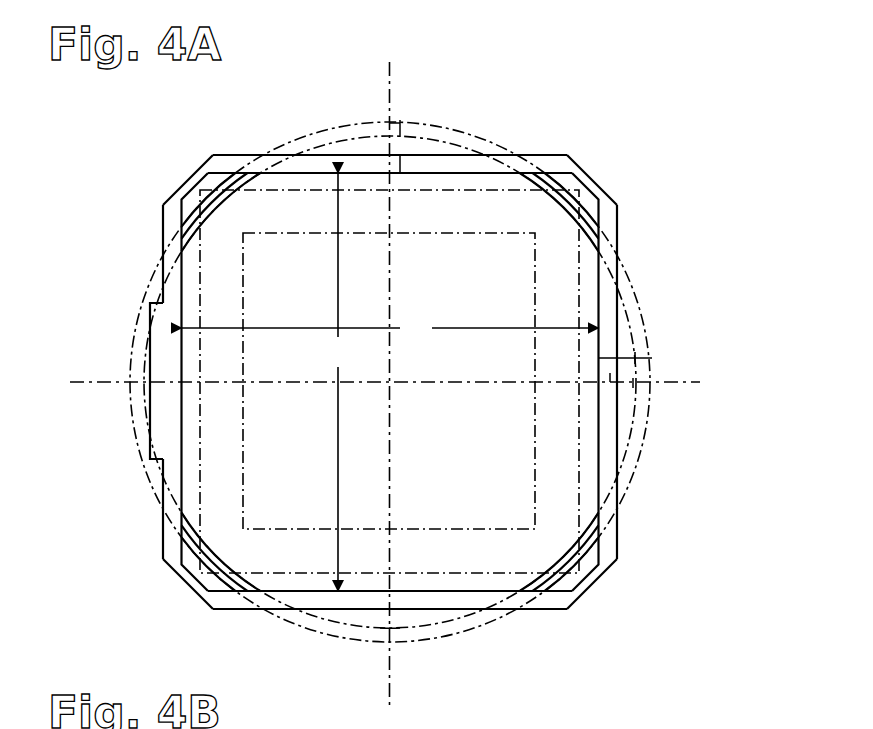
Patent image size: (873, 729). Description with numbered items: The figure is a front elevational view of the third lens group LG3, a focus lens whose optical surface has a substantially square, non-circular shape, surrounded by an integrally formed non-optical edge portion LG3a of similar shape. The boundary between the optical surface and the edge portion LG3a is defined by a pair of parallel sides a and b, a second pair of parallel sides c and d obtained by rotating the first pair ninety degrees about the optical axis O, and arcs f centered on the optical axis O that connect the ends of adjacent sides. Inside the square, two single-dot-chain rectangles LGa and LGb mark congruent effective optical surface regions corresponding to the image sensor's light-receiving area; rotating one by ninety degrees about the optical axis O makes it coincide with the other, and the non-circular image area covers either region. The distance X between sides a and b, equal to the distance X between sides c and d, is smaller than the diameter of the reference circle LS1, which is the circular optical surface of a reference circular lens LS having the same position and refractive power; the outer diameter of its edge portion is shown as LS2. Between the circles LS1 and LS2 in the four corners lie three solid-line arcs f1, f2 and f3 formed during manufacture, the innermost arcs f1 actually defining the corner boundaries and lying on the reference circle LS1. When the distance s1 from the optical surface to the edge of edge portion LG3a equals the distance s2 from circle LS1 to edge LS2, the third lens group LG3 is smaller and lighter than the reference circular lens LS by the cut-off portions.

The third lens group LG3 is at (431, 184).
The edge portion LG3a is at (545, 156).
The side a is at (303, 175).
The side b is at (304, 592).
The side c is at (167, 292).
The side d is at (650, 360).
The arcs f is at (196, 170).
The innermost arcs f1 is at (200, 214).
The arcs f2 is at (200, 196).
The arcs f3 is at (198, 178).
The distance s1 is at (398, 163).
The distance s2 is at (396, 126).
The effective optical surface region LGa is at (579, 279).
The effective optical surface region LGb is at (535, 318).
The reference circular lens LS is at (412, 633).
The reference circle LS1 is at (633, 425).
The edge portion of reference circular lens LS2 is at (633, 472).
The optical axis O is at (391, 383).
The distance X is at (390, 382).